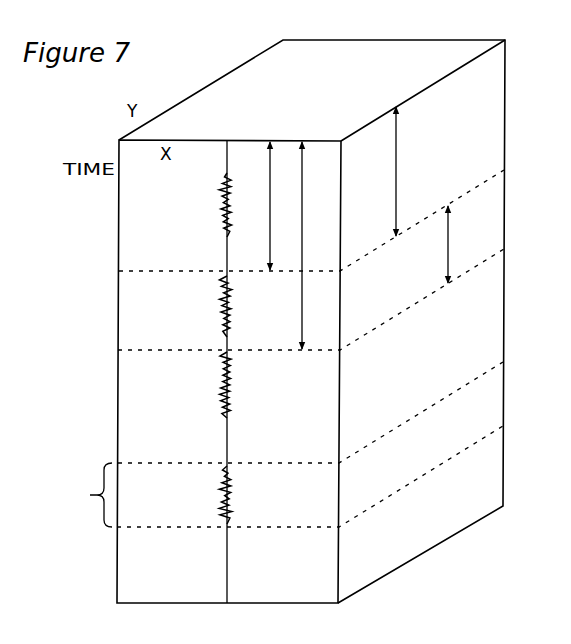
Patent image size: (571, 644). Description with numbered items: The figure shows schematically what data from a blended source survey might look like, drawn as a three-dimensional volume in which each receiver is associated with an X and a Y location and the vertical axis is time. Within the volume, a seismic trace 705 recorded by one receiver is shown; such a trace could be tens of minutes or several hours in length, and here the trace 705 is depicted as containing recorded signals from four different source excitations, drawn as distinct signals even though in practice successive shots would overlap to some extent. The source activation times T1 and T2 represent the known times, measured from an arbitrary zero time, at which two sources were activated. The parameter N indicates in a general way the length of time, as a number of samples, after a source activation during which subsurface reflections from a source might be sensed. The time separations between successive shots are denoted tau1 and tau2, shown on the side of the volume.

The seismic trace 705 is at (227, 139).
The source activation time T1 is at (281, 206).
The source activation time T2 is at (312, 245).
The time separation between successive shots tau1 is at (411, 171).
The time separation between successive shots tau2 is at (429, 244).
The length of time after source activation N is at (89, 495).